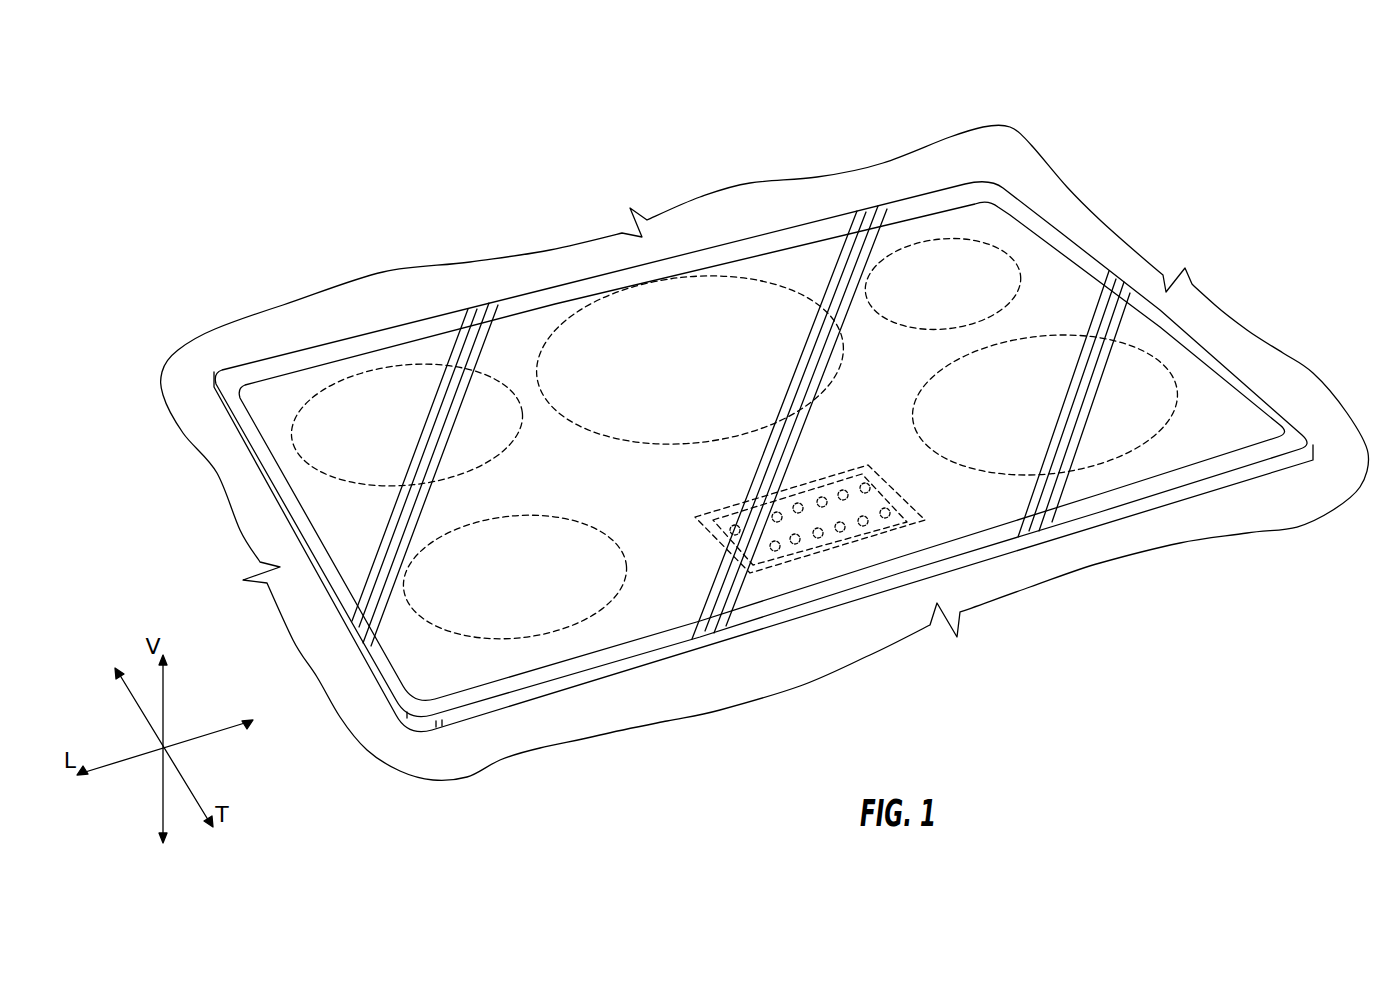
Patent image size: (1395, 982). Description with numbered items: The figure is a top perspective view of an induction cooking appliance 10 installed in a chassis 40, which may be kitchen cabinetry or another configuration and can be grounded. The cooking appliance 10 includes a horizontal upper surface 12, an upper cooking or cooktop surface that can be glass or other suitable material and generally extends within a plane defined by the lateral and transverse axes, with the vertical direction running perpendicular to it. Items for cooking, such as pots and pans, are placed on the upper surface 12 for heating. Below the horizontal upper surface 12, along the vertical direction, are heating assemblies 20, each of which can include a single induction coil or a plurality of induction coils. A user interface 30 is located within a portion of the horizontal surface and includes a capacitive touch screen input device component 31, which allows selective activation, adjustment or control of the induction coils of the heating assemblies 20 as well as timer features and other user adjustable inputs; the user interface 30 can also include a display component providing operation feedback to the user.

The induction cooking appliance 10 is at (739, 402).
The horizontal upper surface 12 is at (343, 522).
The heating assembly 20 is at (1150, 393).
The user interface 30 is at (882, 522).
The capacitive touch screen input device component 31 is at (787, 547).
The chassis 40 is at (1225, 518).